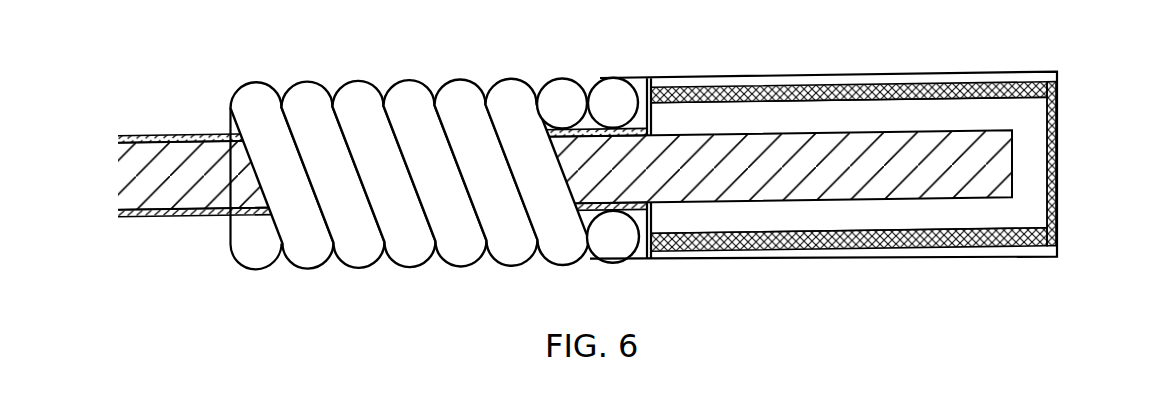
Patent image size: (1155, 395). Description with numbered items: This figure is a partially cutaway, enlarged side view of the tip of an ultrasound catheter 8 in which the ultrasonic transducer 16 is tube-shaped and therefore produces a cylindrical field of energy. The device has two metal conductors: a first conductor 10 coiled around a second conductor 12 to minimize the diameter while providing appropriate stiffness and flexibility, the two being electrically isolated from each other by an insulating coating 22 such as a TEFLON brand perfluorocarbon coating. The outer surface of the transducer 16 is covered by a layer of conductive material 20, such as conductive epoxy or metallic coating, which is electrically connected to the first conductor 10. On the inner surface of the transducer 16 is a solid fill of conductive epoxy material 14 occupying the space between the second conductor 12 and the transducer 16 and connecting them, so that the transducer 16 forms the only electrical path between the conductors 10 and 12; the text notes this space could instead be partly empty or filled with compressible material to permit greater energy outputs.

The ultrasound catheter 8 is at (531, 43).
The first conductor 10 is at (309, 82).
The second conductor 12 is at (186, 193).
The conductive backing layer 14 is at (925, 215).
The ultrasonic transducer 16 is at (745, 86).
The layer of conductive material 20 is at (868, 78).
The insulating coating 22 is at (172, 138).